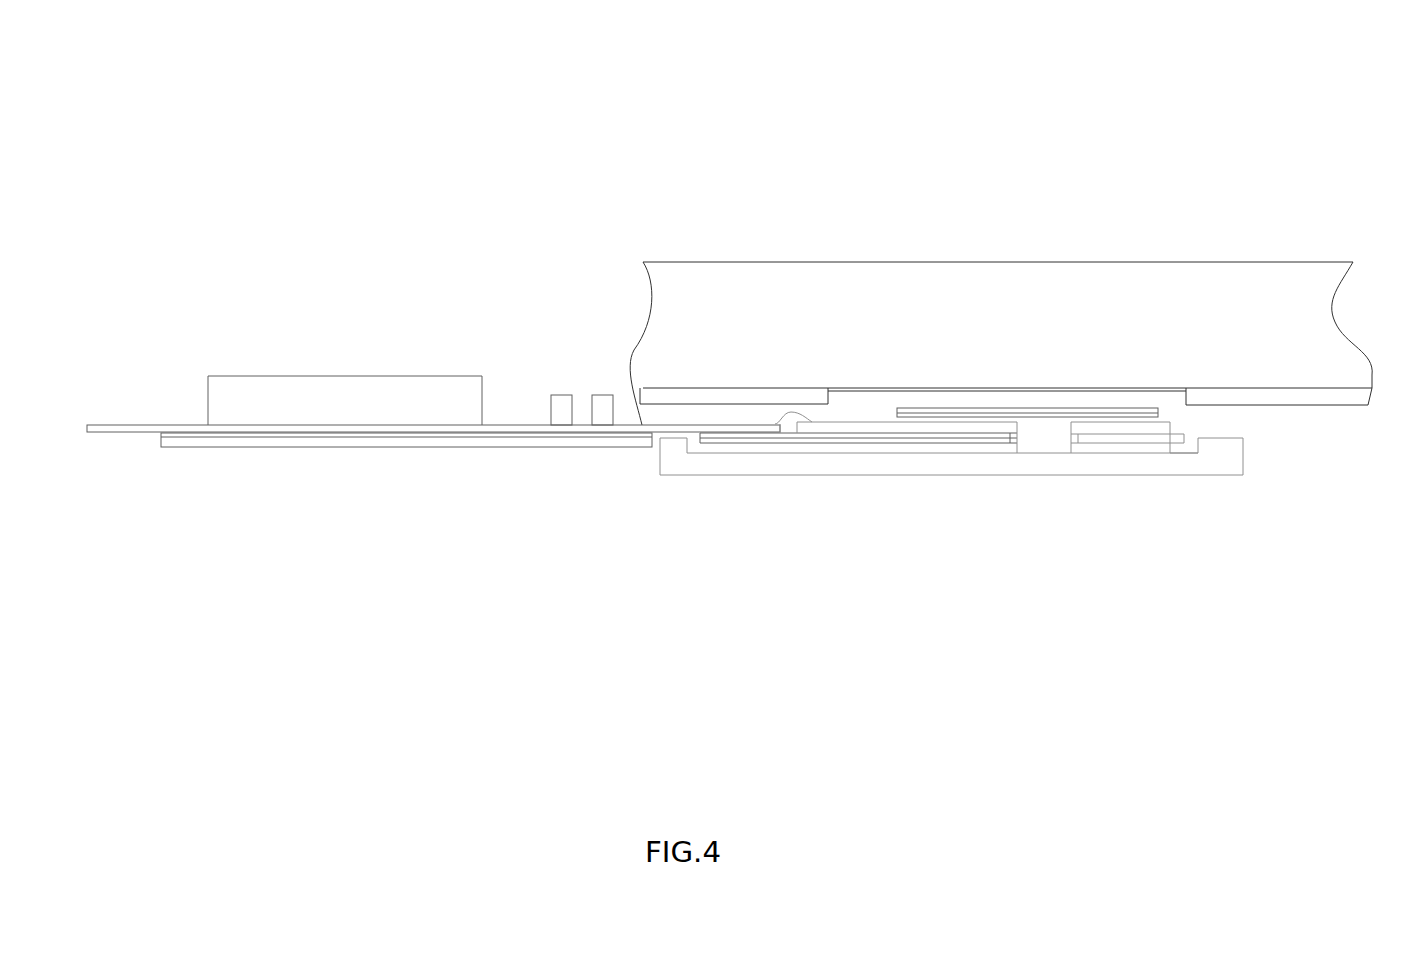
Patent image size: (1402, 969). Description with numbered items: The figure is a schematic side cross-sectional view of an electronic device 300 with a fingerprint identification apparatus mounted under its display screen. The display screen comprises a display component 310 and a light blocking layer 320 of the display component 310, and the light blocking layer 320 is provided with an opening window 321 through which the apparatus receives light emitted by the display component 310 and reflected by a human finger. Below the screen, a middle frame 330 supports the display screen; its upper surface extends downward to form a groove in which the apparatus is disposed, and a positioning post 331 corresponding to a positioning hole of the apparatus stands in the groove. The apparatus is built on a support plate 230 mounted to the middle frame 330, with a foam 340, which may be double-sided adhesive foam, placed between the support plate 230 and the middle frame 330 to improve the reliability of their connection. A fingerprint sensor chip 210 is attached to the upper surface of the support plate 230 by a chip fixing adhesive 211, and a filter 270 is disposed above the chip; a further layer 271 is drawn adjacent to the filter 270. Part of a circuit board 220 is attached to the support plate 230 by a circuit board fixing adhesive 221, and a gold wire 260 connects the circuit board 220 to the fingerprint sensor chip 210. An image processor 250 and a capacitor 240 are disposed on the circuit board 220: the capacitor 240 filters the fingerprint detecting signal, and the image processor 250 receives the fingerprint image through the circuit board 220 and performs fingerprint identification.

The electronic device 300 is at (745, 64).
The display component 310 is at (778, 285).
The light blocking layer 320 is at (662, 398).
The opening window 321 is at (928, 397).
The filter 270 is at (978, 413).
The support layer surface 271 is at (1108, 418).
The image processor 250 is at (271, 375).
The capacitor 240 is at (560, 395).
The gold wire 260 is at (793, 415).
The circuit board 220 is at (757, 433).
The circuit board fixing adhesive 221 is at (730, 433).
The support plate 230 is at (702, 438).
The fingerprint sensor chip 210 is at (1085, 437).
The chip fixing adhesive 211 is at (1102, 437).
The middle frame 330 is at (1236, 452).
The positioning post 331 is at (1027, 440).
The foam 340 is at (1160, 445).